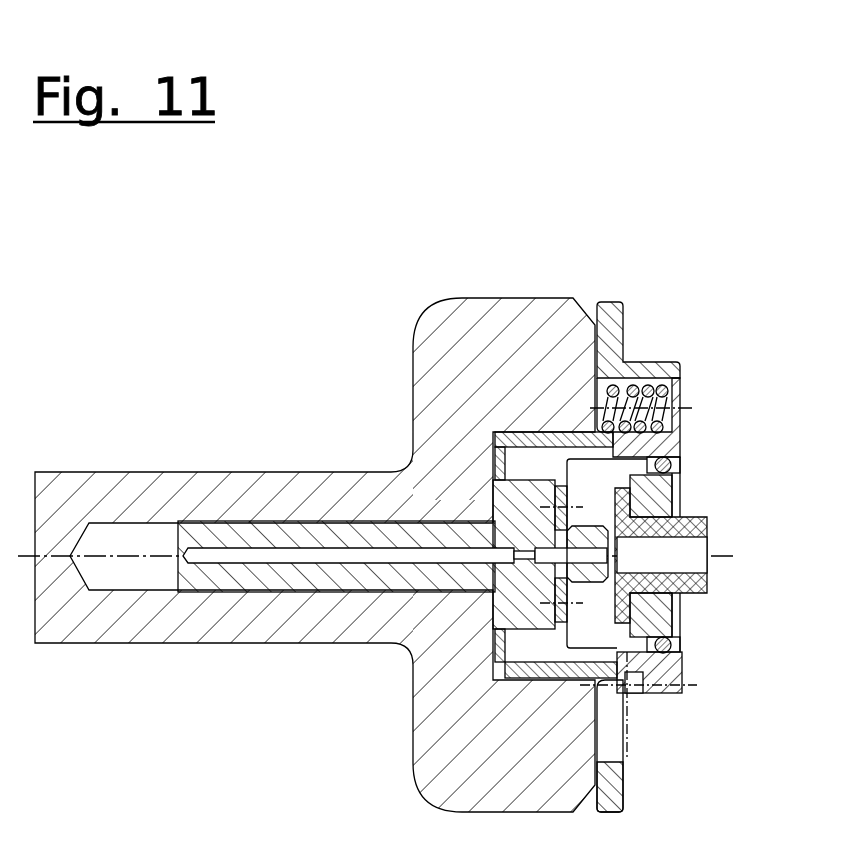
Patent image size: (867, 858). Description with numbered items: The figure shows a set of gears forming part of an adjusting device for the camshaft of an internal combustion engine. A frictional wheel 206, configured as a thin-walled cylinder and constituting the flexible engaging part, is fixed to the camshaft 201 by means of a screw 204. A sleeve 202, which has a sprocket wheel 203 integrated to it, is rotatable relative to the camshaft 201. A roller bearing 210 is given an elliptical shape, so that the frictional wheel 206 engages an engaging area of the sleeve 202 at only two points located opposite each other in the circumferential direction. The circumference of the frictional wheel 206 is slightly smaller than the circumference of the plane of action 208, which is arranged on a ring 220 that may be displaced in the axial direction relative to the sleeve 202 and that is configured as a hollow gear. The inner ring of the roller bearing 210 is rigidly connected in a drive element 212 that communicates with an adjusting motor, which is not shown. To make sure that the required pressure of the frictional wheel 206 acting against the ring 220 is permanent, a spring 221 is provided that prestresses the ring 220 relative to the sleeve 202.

The camshaft 201 is at (292, 637).
The screw 204 is at (433, 587).
The sleeve 202 is at (547, 670).
The sprocket wheel 203 is at (612, 792).
The ring 220 is at (662, 440).
The spring 221 is at (655, 388).
The roller bearing 210 is at (672, 462).
The plane of action 208 is at (670, 647).
The drive element 212 is at (707, 582).
The frictional wheel 206 is at (595, 459).